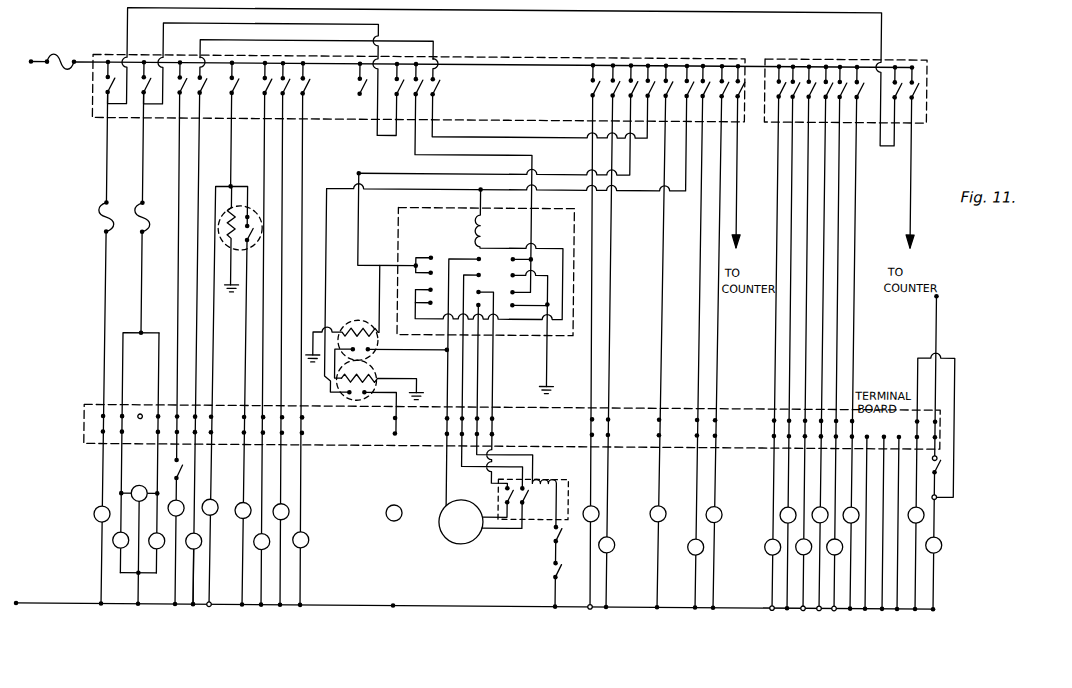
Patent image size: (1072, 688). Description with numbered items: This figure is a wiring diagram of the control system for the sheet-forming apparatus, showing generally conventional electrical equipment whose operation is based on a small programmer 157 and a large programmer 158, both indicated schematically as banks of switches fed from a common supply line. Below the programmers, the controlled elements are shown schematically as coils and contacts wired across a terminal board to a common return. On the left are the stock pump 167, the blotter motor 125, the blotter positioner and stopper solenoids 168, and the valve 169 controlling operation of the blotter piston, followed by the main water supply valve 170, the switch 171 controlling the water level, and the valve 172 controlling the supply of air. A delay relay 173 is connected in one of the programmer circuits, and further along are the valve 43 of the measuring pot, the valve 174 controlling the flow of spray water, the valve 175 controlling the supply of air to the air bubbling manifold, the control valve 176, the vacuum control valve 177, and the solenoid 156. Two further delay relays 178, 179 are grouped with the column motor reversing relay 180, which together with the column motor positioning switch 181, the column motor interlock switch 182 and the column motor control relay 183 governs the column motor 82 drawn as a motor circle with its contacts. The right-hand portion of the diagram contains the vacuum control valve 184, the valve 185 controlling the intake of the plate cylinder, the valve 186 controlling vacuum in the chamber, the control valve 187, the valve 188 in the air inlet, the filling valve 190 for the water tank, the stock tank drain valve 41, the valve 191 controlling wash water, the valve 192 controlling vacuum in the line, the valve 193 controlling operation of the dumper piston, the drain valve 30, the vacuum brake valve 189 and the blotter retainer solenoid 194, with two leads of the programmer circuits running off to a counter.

The small programmer 157 is at (817, 55).
The large programmer 158 is at (689, 56).
The delay relay 173 is at (236, 349).
The column motor reversing relay 180 is at (400, 233).
The delay relay 178 is at (350, 322).
The delay relay 179 is at (383, 371).
The stock pump 167 is at (99, 514).
The blotter motor 125 is at (118, 540).
The blotter positioner and stopper solenoids 168 is at (144, 484).
The valve controlling operation of blotter piston 169 is at (168, 548).
The switch controlling water level 171 is at (187, 465).
The valve controlling flow of spray water 174 is at (187, 512).
The main water supply valve 170 is at (207, 541).
The valve controlling supply of air 172 is at (204, 546).
The valve of pot 43 is at (219, 499).
The valve controlling supply of air to air bubbling manifold 175 is at (274, 544).
The control valve 176 is at (292, 506).
The vacuum control valve 177 is at (313, 530).
The solenoid 156 is at (392, 506).
The column motor 82 is at (449, 533).
The column motor control relay 183 is at (555, 478).
The column motor positioning switch 181 is at (558, 533).
The column motor interlock switch 182 is at (558, 565).
The vacuum control valve 184 is at (604, 510).
The valve controlling intake of plate cylinder 185 is at (620, 542).
The valve controlling vacuum in chamber 186 is at (668, 502).
The control valve 187 is at (726, 506).
The valve in air inlet 188 is at (693, 545).
The stock tank drain valve 41 is at (785, 511).
The filling valve for water tank 190 is at (770, 546).
The valve controlling wash water 191 is at (803, 548).
The valve controlling vacuum in line 192 is at (817, 506).
The valve controlling operation of dumper piston 193 is at (838, 550).
The drain valve 30 is at (879, 507).
The vacuum brake valve 189 is at (929, 511).
The blotter retainer solenoid 194 is at (947, 540).